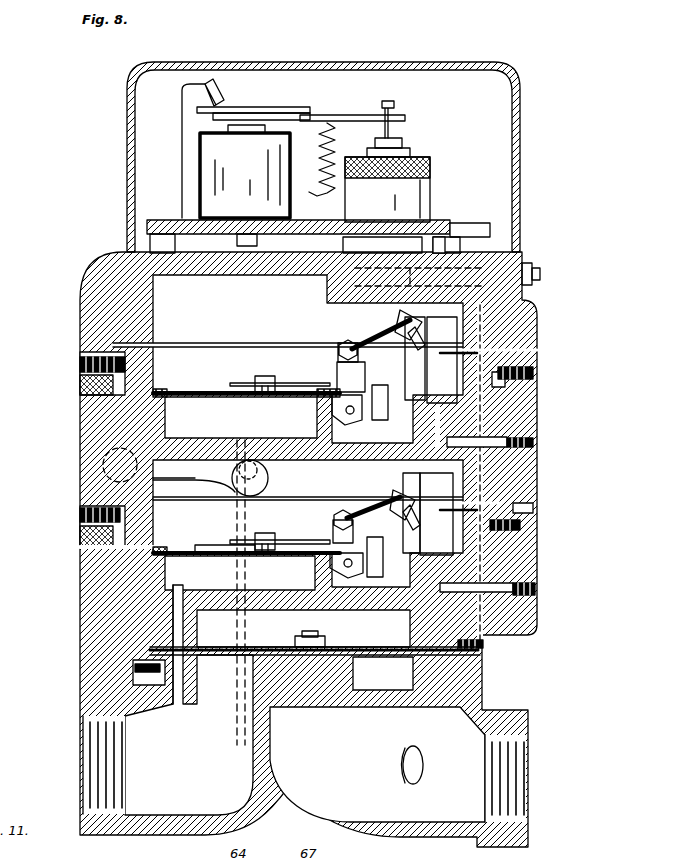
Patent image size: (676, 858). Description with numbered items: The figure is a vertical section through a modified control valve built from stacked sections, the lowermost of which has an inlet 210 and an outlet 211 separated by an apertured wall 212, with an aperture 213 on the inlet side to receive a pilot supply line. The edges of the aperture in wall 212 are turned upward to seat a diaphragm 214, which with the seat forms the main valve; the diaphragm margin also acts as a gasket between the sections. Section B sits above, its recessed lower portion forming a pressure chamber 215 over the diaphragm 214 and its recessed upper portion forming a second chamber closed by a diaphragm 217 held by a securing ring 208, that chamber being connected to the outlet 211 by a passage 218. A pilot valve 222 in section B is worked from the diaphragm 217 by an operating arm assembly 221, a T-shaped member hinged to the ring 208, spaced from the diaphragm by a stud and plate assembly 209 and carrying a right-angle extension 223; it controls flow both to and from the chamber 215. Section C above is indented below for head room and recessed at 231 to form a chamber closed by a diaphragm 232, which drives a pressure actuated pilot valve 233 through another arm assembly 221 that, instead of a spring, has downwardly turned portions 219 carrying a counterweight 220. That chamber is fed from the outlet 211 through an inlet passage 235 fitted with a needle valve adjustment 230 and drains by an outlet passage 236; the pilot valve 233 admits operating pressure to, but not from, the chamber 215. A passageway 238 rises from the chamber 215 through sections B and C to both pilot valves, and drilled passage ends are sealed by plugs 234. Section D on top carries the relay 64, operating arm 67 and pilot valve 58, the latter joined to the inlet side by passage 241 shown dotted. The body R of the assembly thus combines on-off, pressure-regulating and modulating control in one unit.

The relay 64 is at (215, 143).
The operating arm 67 is at (357, 116).
The pilot valve 58 is at (428, 187).
The passage 218 is at (505, 262).
The passage 241 is at (530, 290).
The pressure actuated pilot valve 233 is at (407, 323).
The section D is at (527, 345).
The diaphragm 232 is at (208, 394).
The operating arm assembly 221 is at (274, 384).
The plugs 234 is at (320, 392).
The counterweight 220 is at (380, 390).
The downwardly turned portions 219 is at (346, 489).
The outlet passage 236 is at (190, 440).
The inlet passage 235 is at (250, 440).
The recess 231 is at (298, 440).
The needle valve adjustment 230 is at (266, 484).
The pilot valve 222 is at (404, 480).
The section C is at (520, 493).
The passageway 238 is at (537, 462).
The section B is at (520, 573).
The valve body R is at (518, 710).
The securing ring 208 is at (168, 548).
The diaphragm 217 is at (185, 550).
The stud and plate assembly 209 is at (215, 547).
The extension 223 is at (262, 538).
The pressure chamber 215 is at (282, 608).
The diaphragm 214 is at (378, 648).
The apertured wall 212 is at (400, 706).
The aperture 213 is at (400, 776).
The outlet 211 is at (95, 762).
The inlet 210 is at (518, 775).